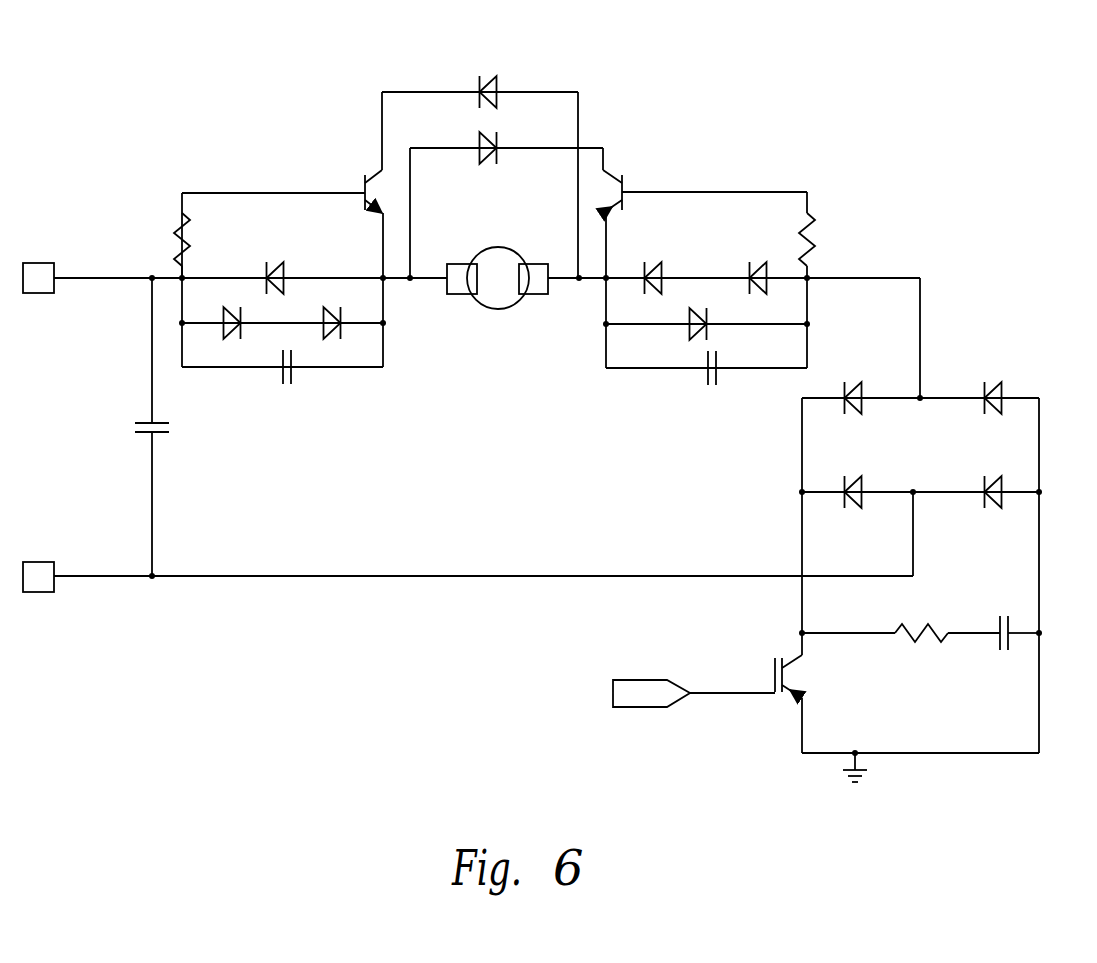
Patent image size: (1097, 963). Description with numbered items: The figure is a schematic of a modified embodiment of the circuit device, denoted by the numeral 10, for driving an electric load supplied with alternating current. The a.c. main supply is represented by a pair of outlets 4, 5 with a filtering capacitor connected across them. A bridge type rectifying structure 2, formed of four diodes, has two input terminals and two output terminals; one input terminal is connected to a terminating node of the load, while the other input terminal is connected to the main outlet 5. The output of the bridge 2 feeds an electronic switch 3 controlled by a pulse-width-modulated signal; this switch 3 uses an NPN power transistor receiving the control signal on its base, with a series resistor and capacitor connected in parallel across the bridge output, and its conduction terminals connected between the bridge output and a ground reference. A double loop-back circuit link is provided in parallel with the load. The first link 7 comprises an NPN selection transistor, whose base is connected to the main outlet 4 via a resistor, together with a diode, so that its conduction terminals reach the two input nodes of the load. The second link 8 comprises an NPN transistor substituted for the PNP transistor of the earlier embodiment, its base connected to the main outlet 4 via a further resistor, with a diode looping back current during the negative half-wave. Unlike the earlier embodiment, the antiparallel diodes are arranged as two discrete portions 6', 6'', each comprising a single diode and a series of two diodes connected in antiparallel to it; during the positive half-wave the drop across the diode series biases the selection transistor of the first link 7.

The bridge type rectifying structure 2 is at (940, 362).
The electronic switch 3 is at (786, 716).
The main outlet 4 is at (33, 280).
The main outlet 5 is at (40, 578).
The first discrete diode portion 6' is at (265, 328).
The second discrete diode portion 6'' is at (704, 344).
The first circuit link 7 is at (378, 92).
The second circuit link 8 is at (661, 171).
The modified embodiment of the circuit device 10 is at (866, 148).